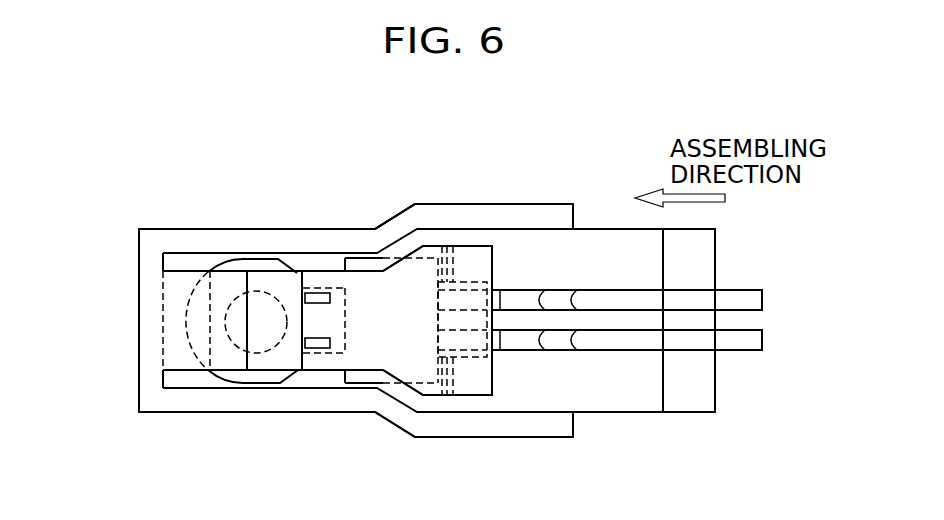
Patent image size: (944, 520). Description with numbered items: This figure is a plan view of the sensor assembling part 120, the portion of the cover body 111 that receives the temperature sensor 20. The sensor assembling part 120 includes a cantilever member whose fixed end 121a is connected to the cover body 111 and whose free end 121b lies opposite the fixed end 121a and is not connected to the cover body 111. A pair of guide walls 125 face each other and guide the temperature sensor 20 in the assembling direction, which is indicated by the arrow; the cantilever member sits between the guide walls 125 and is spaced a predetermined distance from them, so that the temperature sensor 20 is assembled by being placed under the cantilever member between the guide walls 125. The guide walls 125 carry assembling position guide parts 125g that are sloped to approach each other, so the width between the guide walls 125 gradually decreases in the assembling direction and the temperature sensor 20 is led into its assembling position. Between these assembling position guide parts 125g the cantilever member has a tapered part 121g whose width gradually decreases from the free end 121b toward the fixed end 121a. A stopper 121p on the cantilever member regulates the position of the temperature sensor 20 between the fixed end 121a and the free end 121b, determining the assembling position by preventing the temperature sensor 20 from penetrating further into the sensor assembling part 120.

The sensor assembling part 120 is at (237, 202).
The guide walls 125 is at (563, 220).
The assembling position guide parts 125g is at (383, 222).
The tapered part 121g is at (412, 251).
The cover body 111 is at (147, 323).
The fixed end 121a is at (172, 323).
The stopper 121p is at (317, 350).
The temperature sensor 20 is at (372, 375).
The free end 121b is at (488, 323).